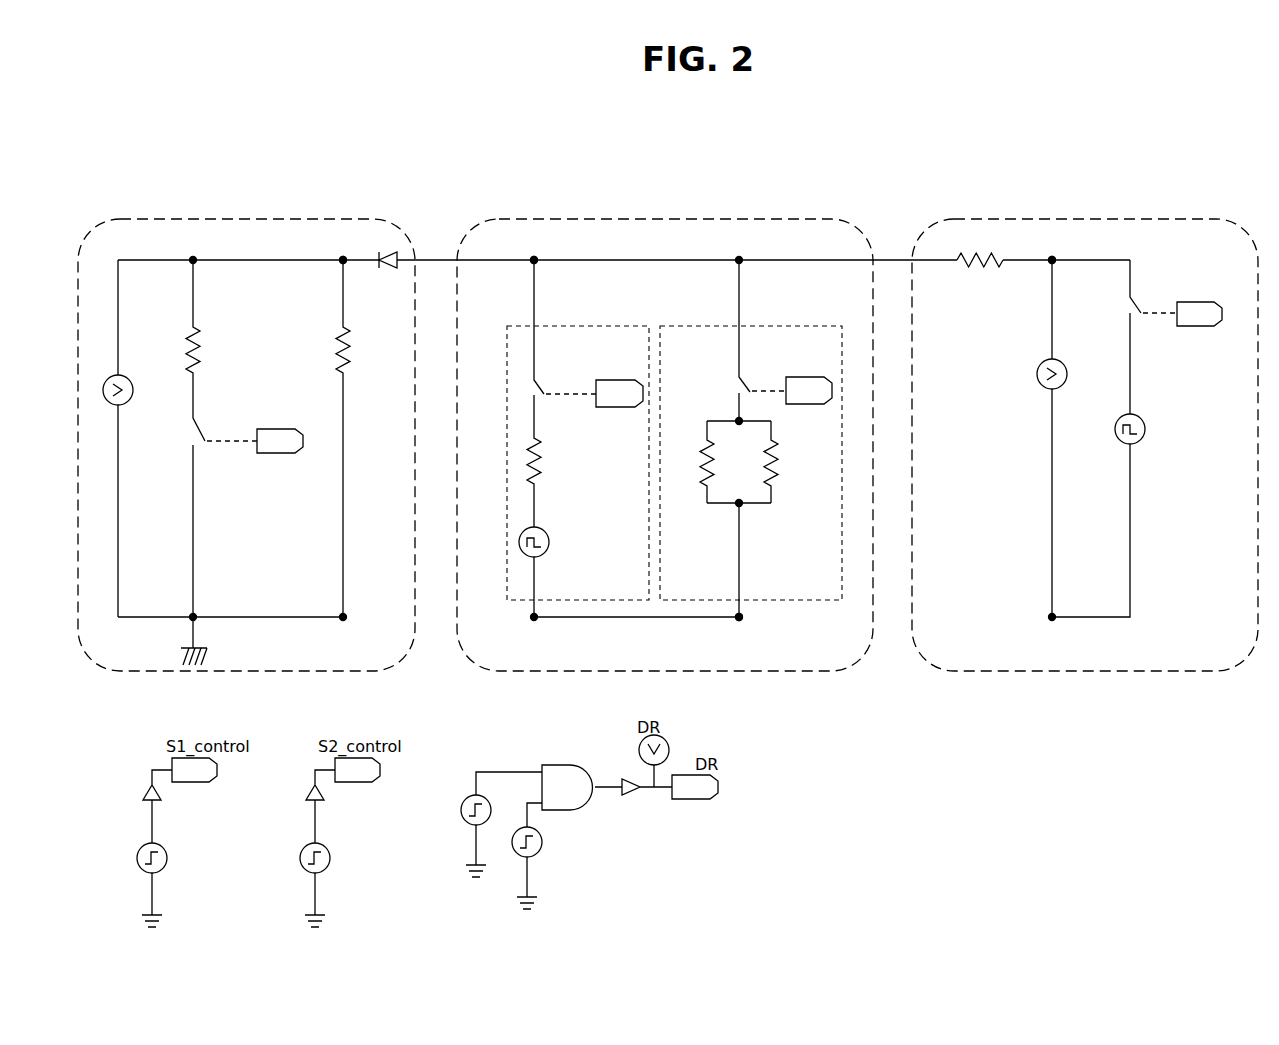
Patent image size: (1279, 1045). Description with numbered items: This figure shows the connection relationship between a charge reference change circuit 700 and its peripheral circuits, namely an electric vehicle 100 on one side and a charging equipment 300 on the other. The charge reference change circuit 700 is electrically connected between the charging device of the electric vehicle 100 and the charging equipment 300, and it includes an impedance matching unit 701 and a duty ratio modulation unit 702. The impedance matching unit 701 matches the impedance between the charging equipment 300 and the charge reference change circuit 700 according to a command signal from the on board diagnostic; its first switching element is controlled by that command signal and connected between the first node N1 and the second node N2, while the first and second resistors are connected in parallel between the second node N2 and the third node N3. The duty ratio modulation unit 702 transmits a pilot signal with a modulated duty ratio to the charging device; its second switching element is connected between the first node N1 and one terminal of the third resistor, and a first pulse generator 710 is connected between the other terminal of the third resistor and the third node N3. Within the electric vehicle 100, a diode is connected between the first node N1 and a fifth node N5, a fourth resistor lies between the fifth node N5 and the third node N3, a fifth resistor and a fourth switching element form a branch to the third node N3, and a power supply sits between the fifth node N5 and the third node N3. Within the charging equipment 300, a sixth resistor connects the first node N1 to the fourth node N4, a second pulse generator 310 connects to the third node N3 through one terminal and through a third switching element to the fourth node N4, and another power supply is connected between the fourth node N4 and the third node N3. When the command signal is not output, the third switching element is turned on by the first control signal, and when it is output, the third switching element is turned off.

The electric vehicle 100 is at (202, 218).
The charging equipment 300 is at (1130, 219).
The second pulse generator 310 is at (1141, 440).
The charge reference change circuit 700 is at (796, 219).
The impedance matching unit 701 is at (684, 326).
The duty ratio modulation unit 702 is at (607, 326).
The first pulse generator 710 is at (549, 542).
The first node N1 is at (534, 260).
The second node N2 is at (739, 421).
The third node N3 is at (742, 620).
The fourth node N4 is at (1052, 260).
The fifth node N5 is at (343, 260).